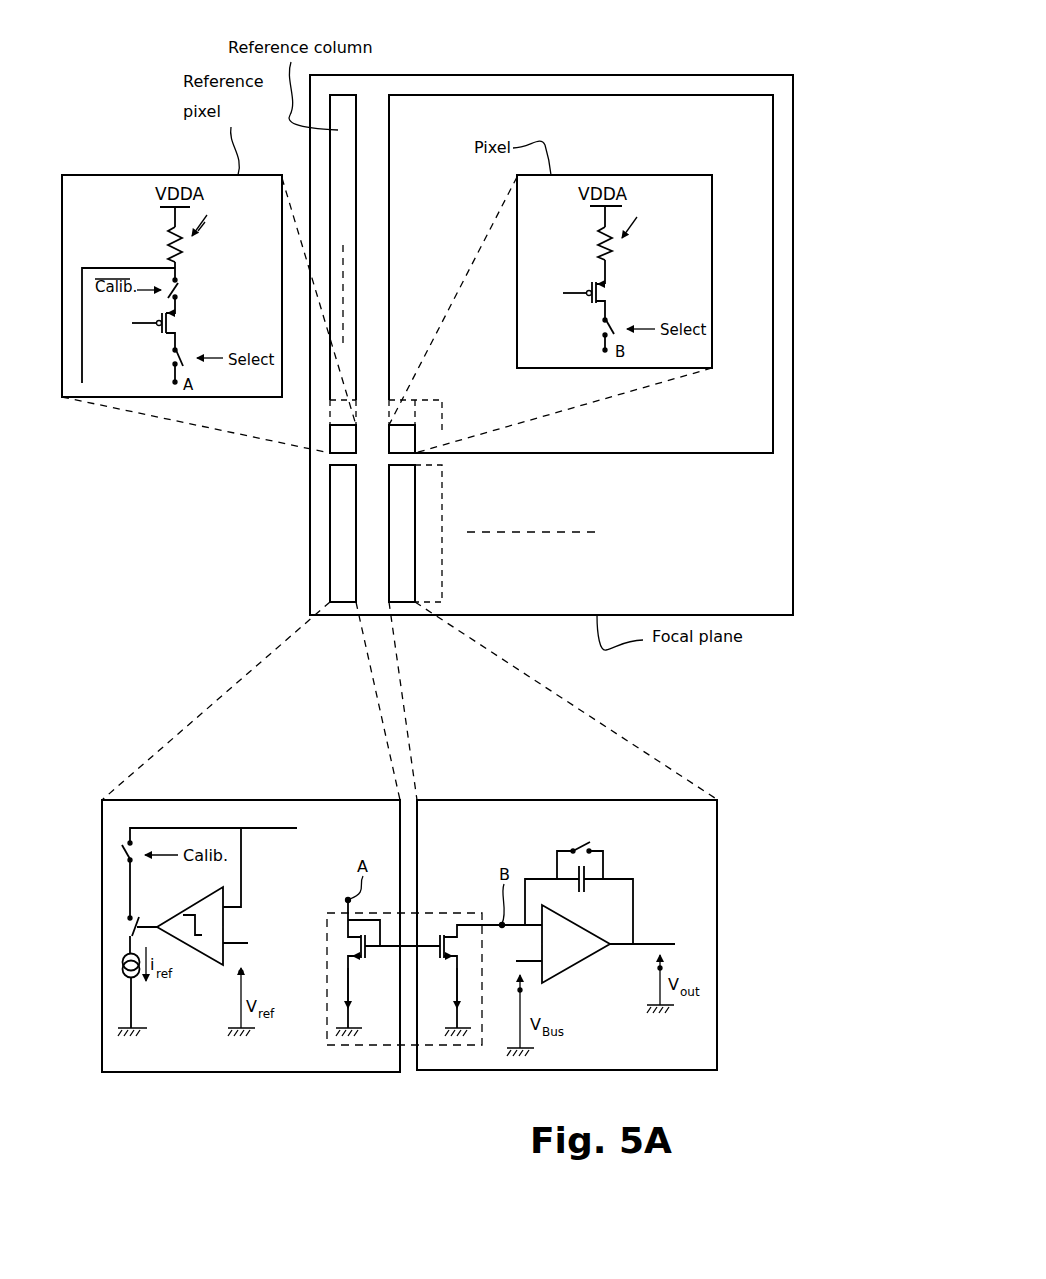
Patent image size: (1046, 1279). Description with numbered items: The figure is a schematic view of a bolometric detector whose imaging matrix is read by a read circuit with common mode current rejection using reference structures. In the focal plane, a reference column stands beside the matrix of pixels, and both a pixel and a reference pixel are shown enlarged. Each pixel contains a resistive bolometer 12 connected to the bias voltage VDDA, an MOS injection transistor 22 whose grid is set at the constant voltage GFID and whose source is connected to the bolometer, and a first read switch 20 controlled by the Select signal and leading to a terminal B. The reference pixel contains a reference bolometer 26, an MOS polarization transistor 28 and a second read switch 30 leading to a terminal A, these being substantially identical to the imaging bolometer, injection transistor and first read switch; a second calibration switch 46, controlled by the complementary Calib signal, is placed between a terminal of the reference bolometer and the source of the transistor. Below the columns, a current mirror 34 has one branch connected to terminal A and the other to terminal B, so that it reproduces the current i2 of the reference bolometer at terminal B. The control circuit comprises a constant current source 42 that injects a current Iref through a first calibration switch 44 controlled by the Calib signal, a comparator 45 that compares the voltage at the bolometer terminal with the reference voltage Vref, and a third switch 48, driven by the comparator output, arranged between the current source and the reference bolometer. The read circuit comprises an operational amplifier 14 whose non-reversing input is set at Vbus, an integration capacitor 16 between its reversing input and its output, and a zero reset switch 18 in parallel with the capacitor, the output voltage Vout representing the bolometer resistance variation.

The resistive bolometer 12 is at (613, 245).
The operational amplifier 14 is at (588, 960).
The capacitor 16 is at (596, 880).
The zero reset switch 18 is at (600, 850).
The first read switch 20 is at (603, 323).
The MOS injection transistor 22 is at (589, 284).
The reference bolometer 26 is at (173, 240).
The MOS polarization transistor 28 is at (174, 320).
The second read switch 30 is at (170, 353).
The current mirror 34 is at (375, 1045).
The constant current source 42 is at (122, 963).
The first calibration switch 44 is at (120, 850).
The comparator 45 is at (203, 958).
The second calibration switch 46 is at (178, 288).
The third switch 48 is at (130, 926).